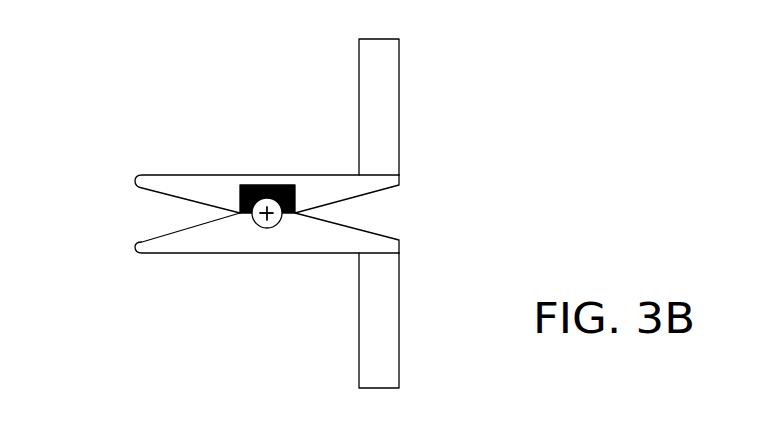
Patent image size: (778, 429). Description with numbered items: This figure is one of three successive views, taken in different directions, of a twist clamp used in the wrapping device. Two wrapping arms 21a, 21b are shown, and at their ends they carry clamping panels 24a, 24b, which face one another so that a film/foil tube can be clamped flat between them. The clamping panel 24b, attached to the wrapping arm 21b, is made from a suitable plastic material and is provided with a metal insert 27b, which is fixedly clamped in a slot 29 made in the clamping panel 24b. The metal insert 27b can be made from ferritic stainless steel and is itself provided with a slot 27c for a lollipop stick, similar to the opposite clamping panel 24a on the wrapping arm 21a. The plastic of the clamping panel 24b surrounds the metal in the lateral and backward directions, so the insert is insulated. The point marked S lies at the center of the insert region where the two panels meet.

The wrapping arm 21a is at (380, 362).
The wrapping arm 21b is at (380, 124).
The clamping panel 24a is at (173, 247).
The clamping panel 24b is at (181, 188).
The metal insert 27b is at (267, 199).
The slot 27c is at (270, 204).
The slot 29 is at (293, 187).
The pivot point S is at (255, 222).